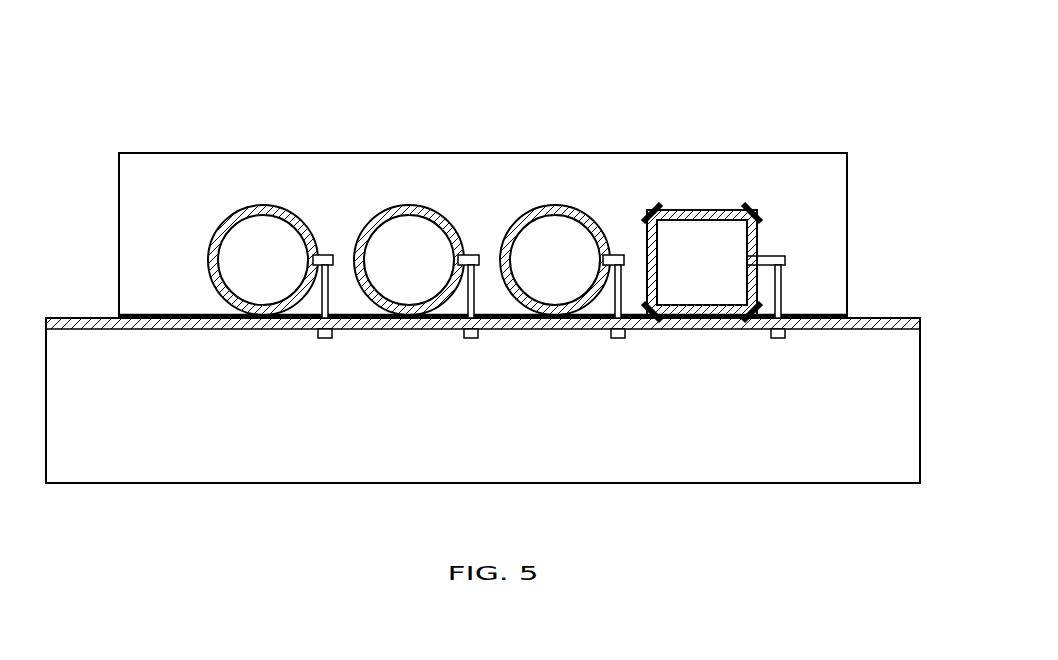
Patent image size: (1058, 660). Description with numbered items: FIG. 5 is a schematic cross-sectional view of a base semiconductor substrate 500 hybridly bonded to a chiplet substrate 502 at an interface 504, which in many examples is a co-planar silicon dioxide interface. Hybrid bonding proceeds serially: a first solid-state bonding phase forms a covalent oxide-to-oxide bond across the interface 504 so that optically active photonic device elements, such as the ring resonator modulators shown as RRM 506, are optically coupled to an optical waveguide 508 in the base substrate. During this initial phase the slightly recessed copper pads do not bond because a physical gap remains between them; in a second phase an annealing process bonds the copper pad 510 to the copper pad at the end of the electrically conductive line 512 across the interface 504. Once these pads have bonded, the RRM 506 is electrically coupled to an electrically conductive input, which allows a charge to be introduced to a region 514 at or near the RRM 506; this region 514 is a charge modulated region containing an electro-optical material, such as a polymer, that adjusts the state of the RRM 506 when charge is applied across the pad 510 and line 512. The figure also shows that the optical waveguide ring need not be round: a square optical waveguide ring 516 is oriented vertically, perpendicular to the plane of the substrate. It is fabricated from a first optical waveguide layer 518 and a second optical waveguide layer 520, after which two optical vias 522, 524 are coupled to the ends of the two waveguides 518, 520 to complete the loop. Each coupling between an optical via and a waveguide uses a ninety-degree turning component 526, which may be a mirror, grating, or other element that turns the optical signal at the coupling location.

The base substrate 500 is at (745, 483).
The chiplet substrate 502 is at (143, 152).
The interface 504 is at (117, 317).
The RRM 506 is at (267, 203).
The waveguide 508 is at (860, 318).
The copper pad 510 is at (328, 338).
The electrically conductive line 512 is at (330, 288).
The region 514 is at (327, 255).
The square optical waveguide ring 516 is at (715, 208).
The waveguide 518 is at (718, 213).
The waveguide 520 is at (705, 310).
The optical via 522 is at (645, 225).
The optical via 524 is at (757, 238).
The 90-degree turning component 526 is at (655, 212).